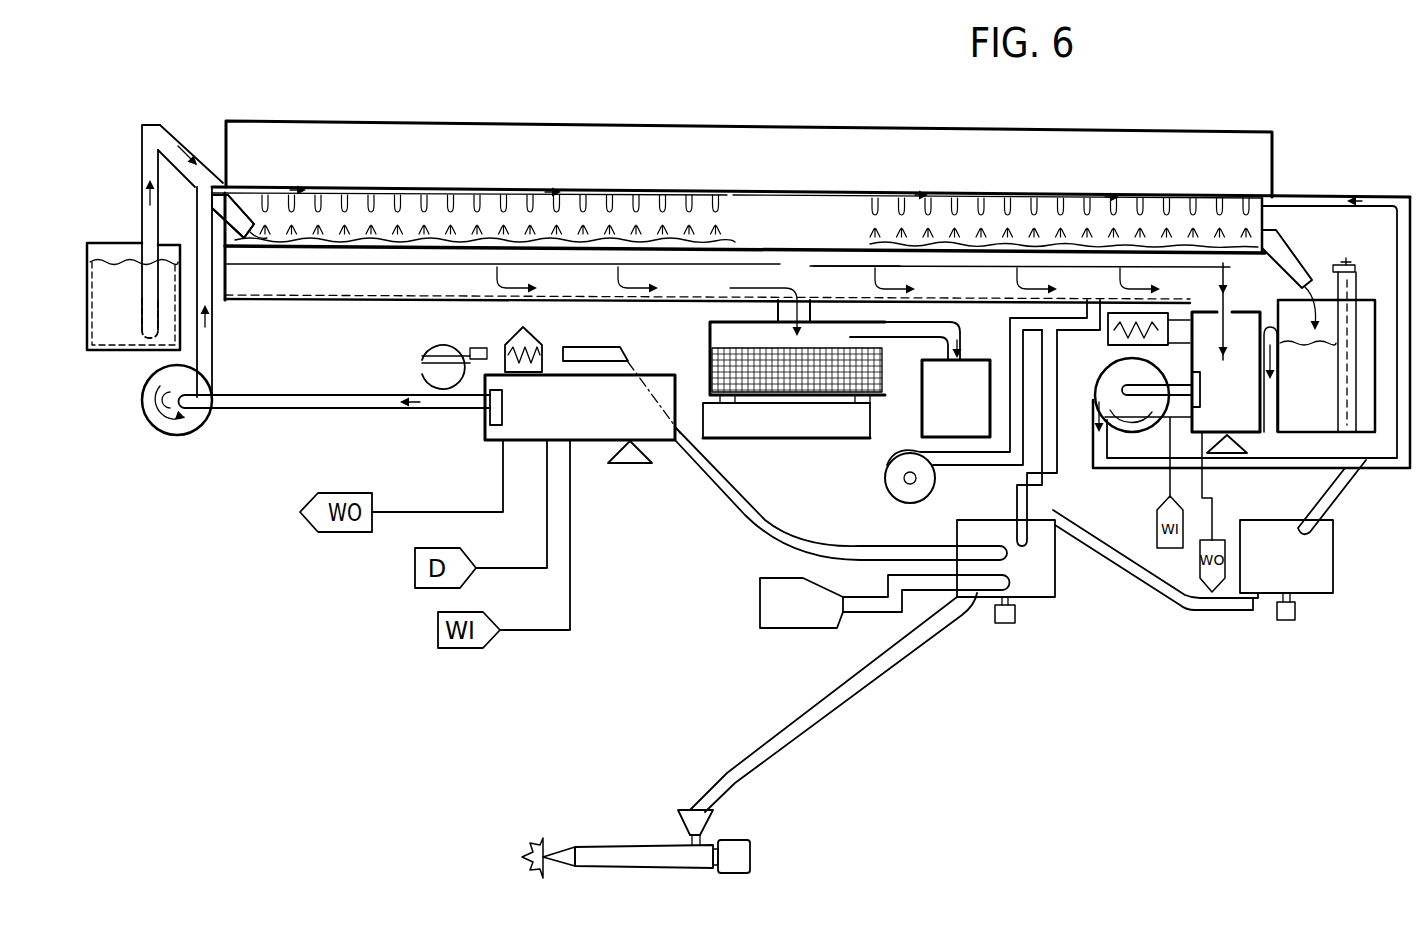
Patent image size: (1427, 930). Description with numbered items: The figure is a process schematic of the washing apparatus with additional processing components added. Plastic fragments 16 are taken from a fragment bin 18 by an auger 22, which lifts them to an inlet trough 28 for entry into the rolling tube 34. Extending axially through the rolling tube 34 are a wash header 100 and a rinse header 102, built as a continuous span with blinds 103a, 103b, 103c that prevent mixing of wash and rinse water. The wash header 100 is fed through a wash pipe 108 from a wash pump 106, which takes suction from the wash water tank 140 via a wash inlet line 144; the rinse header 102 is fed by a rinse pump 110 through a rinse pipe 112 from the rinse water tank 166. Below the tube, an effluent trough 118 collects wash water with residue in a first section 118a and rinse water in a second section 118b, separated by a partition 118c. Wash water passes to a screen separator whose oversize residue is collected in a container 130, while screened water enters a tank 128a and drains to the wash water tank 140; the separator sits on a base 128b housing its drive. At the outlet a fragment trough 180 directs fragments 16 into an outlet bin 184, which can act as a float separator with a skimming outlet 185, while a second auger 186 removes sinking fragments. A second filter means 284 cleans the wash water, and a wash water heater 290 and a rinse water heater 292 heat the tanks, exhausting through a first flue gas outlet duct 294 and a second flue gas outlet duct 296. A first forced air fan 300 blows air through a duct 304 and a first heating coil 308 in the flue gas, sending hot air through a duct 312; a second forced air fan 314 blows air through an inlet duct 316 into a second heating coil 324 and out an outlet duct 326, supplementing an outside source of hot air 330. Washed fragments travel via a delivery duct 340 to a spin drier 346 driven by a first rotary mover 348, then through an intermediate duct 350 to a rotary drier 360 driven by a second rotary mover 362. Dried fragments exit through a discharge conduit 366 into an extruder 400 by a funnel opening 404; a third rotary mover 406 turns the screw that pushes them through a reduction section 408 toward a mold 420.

The fragments 16 is at (126, 336).
The fragment bin 18 is at (88, 350).
The auger 22 is at (142, 196).
The inlet trough 28 is at (181, 143).
The rolling tube 34 is at (588, 124).
The wash header 100 is at (633, 192).
The rinse header 102 is at (996, 196).
The blind 103a is at (737, 194).
The blind 103b is at (737, 194).
The blind 103c is at (737, 194).
The wash pump 106 is at (177, 437).
The wash pipe 108 is at (214, 343).
The rinse pump 110 is at (1104, 372).
The rinse pipe 112 is at (1406, 445).
The effluent trough 118 is at (313, 301).
The first section 118a is at (783, 272).
The second section 118b is at (867, 260).
The partition 118c is at (860, 272).
The tank 128a is at (710, 326).
The base 128b is at (774, 439).
The container 130 is at (942, 410).
The wash water tank 140 is at (486, 443).
The wash inlet line 144 is at (338, 410).
The rinse water tank 166 is at (1220, 408).
The fragment trough 180 is at (1288, 235).
The outlet bin 184 is at (1322, 300).
The skimming outlet 185 is at (1278, 343).
The second auger 186 is at (1357, 270).
The second filter means 284 is at (504, 413).
The wash water heater 290 is at (633, 465).
The rinse water heater 292 is at (1232, 456).
The first flue gas outlet duct 294 is at (544, 348).
The second flue gas outlet duct 296 is at (1140, 320).
The first forced air fan 300 is at (380, 367).
The duct 304 is at (456, 364).
The first heating coil 308 is at (505, 345).
The duct 312 is at (622, 350).
The second forced air fan 314 is at (886, 478).
The inlet duct 316 is at (965, 325).
The second heating coil 324 is at (1172, 313).
The outlet duct 326 is at (1060, 440).
The outside source of hot air 330 is at (770, 630).
The delivery duct 340 is at (1333, 496).
The spin drier 346 is at (1318, 596).
The first rotary mover 348 is at (1287, 621).
The intermediate duct 350 is at (1193, 612).
The rotary drier 360 is at (1040, 598).
The second rotary mover 362 is at (1005, 624).
The discharge conduit 366 is at (910, 652).
The extruder 400 is at (656, 821).
The funnel opening 404 is at (684, 826).
The third rotary mover 406 is at (752, 858).
The reduction section 408 is at (564, 847).
The mold 420 is at (527, 848).